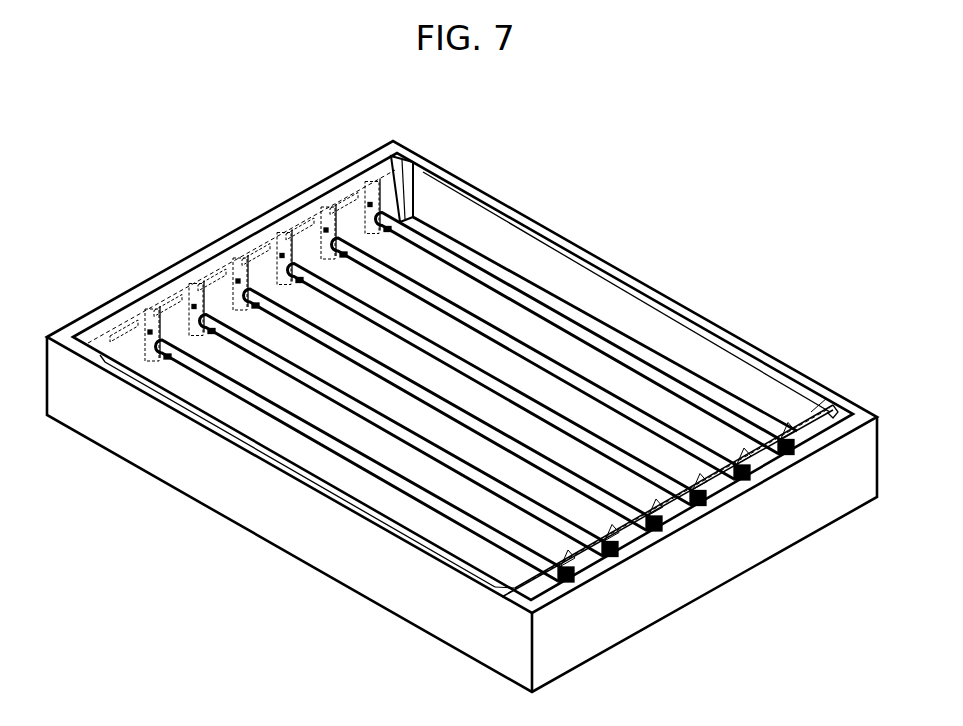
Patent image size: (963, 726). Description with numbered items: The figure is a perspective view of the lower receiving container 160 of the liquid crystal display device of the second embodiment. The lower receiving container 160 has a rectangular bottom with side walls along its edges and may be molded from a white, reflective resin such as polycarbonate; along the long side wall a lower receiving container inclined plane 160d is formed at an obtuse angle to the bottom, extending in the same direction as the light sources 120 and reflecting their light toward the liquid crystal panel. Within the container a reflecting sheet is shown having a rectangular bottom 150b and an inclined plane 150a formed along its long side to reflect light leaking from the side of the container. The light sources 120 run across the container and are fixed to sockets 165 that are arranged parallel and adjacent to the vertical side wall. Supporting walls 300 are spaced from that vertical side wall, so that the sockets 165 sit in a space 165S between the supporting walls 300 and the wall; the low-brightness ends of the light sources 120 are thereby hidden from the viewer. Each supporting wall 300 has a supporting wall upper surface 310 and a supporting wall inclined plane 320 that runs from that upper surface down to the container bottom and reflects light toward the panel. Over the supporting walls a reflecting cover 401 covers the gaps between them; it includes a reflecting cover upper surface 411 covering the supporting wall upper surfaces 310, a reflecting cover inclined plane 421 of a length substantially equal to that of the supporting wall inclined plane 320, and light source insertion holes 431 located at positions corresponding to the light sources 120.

The lower receiving container 160 is at (795, 303).
The lower receiving container inclined plane 160d is at (407, 198).
The light source 120 is at (582, 342).
The inclined plane 150a is at (697, 348).
The bottom 150b is at (430, 428).
The socket 165 is at (803, 447).
The space 165S is at (837, 412).
The supporting wall 300 is at (294, 188).
The supporting wall upper surface 310 is at (300, 227).
The supporting wall inclined plane 320 is at (347, 233).
The reflecting cover 401 is at (157, 239).
The reflecting cover upper surface 411 is at (112, 323).
The reflecting cover inclined plane 421 is at (167, 310).
The light source insertion hole 431 is at (207, 317).